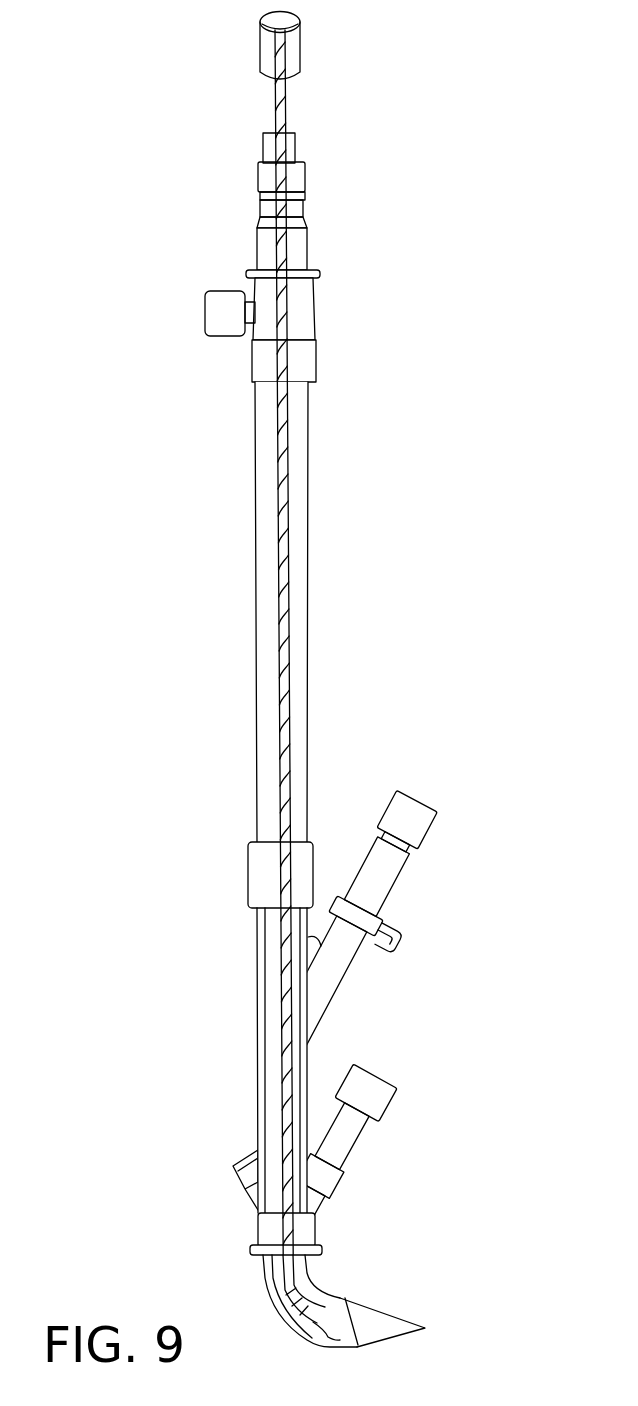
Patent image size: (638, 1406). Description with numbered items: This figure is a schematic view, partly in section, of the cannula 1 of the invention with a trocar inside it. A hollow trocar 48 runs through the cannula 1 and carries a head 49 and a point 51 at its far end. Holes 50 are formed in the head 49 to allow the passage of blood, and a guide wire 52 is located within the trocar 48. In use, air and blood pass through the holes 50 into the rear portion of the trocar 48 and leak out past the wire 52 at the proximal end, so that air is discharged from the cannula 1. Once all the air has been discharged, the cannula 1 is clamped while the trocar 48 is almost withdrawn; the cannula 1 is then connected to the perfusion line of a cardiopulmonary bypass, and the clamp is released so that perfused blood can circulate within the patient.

The cannula 1 is at (357, 703).
The hollow trocar 48 is at (386, 1306).
The head 49 is at (383, 1322).
The holes 50 is at (378, 1346).
The point 51 is at (425, 1327).
The guide wire 52 is at (289, 670).